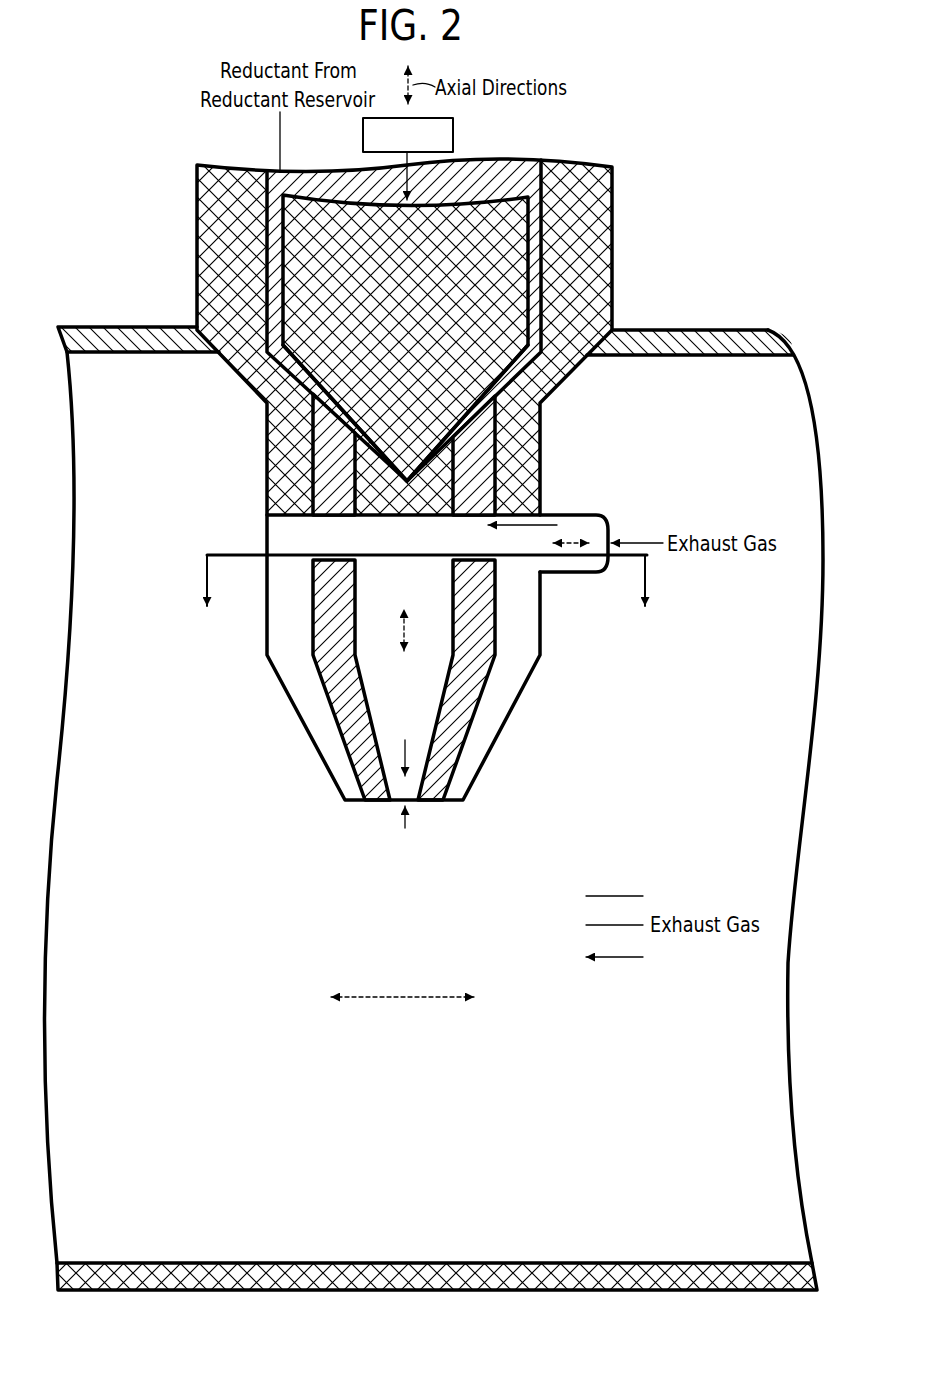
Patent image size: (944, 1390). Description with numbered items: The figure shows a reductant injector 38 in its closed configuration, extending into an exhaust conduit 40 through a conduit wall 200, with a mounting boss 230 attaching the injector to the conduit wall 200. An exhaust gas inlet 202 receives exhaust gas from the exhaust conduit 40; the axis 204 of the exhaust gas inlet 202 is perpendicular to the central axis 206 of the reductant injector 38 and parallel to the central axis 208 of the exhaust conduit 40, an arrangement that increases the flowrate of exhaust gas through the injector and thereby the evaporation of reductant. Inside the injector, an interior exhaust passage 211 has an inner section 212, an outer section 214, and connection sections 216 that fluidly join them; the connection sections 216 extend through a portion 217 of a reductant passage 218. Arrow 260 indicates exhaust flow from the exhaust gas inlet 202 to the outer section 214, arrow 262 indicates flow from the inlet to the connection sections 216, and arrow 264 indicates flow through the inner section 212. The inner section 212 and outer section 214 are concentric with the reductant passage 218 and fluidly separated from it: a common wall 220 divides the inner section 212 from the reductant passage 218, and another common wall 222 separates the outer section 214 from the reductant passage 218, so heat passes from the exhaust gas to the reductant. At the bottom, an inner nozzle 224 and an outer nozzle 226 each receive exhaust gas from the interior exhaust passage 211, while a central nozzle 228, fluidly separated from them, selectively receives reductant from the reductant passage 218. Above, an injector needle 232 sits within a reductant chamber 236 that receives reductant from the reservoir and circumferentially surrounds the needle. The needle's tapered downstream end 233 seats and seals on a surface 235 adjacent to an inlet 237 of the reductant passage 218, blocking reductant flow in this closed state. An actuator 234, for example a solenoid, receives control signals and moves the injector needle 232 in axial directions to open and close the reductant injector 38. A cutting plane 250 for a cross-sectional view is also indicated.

The reductant injector 38 is at (720, 198).
The exhaust conduit 40 is at (660, 824).
The conduit wall 200 is at (695, 333).
The exhaust gas inlet 202 is at (615, 531).
The axis of the exhaust gas inlet 204 is at (573, 533).
The central axis of the reductant injector 206 is at (405, 645).
The central axis of the exhaust conduit 208 is at (410, 996).
The interior exhaust passage 211 is at (549, 624).
The inner section 212 is at (419, 603).
The outer section 214 is at (306, 603).
The connection sections 216 is at (349, 551).
The portion of the reductant passage 217 is at (365, 537).
The reductant passage 218 is at (478, 647).
The common wall 220 is at (443, 707).
The common wall 222 is at (323, 688).
The inner nozzle 224 is at (407, 830).
The outer nozzle 226 is at (360, 807).
The central nozzle 228 is at (432, 806).
The mounting boss 230 is at (212, 309).
The injector needle 232 is at (417, 292).
The downstream end 233 is at (422, 468).
The actuator 234 is at (454, 146).
The surface 235 is at (368, 440).
The reductant chamber 236 is at (533, 216).
The inlet of the reductant passage 237 is at (337, 431).
The cutting plane 250 is at (245, 554).
The arrow 260 is at (551, 528).
The arrow 262 is at (521, 563).
The arrow 264 is at (408, 751).